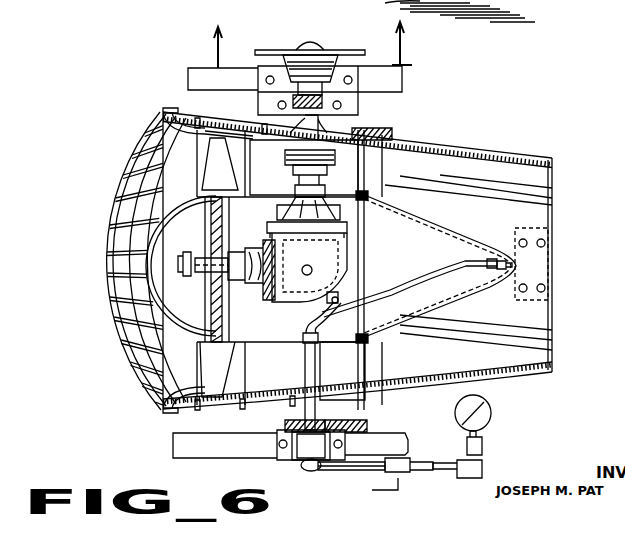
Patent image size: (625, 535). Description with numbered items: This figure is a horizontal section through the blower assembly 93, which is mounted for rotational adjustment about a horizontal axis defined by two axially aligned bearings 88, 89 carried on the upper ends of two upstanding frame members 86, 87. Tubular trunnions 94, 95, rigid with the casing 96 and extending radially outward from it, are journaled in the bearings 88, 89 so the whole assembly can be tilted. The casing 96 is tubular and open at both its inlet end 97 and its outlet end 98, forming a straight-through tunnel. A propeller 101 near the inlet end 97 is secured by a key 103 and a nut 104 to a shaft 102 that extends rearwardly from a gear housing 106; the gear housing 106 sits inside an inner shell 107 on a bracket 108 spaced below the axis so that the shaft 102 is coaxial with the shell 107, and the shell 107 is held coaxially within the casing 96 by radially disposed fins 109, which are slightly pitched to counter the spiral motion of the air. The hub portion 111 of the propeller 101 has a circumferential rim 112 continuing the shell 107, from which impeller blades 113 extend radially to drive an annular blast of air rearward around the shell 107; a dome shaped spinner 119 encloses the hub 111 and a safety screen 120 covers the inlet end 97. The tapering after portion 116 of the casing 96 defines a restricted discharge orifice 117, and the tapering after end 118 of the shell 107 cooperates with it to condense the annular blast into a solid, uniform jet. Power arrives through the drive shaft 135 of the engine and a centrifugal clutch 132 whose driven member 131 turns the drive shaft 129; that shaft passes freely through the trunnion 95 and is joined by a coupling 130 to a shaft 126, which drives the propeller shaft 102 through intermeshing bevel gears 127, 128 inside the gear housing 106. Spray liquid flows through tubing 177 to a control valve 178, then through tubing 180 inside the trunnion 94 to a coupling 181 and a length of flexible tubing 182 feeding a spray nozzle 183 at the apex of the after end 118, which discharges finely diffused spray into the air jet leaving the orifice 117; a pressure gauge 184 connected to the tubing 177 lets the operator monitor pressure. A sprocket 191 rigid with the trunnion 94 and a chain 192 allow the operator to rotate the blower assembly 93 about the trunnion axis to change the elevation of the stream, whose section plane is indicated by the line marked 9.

The section line arrows 9 is at (309, 45).
The upstanding frame member 86 is at (183, 448).
The upstanding frame member 87 is at (405, 83).
The bearing 88 is at (308, 442).
The bearing 89 is at (341, 105).
The blower assembly 93 is at (537, 152).
The tubular trunnion 94 is at (284, 410).
The tubular trunnion 95 is at (304, 167).
The casing 96 is at (262, 130).
The inlet end 97 is at (150, 172).
The outlet end 98 is at (532, 203).
The propeller 101 is at (208, 182).
The shaft 102 is at (232, 278).
The key 103 is at (212, 250).
The nut 104 is at (180, 260).
The gear housing 106 is at (322, 268).
The inner casing or shell 107 is at (363, 200).
The bracket 108 is at (332, 321).
The radially disposed fins 109 is at (288, 188).
The hub portion 111 is at (220, 308).
The circumferential rim 112 is at (192, 360).
The impeller blades 113 is at (213, 384).
The after portion 116 is at (507, 127).
The discharge orifice 117 is at (552, 367).
The after end 118 is at (472, 304).
The dome shaped spinner 119 is at (108, 327).
The safety screen 120 is at (108, 222).
The shaft 126 is at (350, 180).
The bevel gear 127 is at (348, 235).
The bevel gear 128 is at (330, 284).
The drive shaft 129 is at (367, 125).
The coupling 130 is at (350, 160).
The driven member 131 is at (325, 63).
The centrifugal clutch 132 is at (287, 55).
The drive shaft 135 is at (320, 38).
The tubing 177 is at (484, 488).
The control valve 178 is at (398, 473).
The tubing 180 is at (342, 468).
The coupling 181 is at (303, 340).
The flexible tubing 182 is at (445, 280).
The spray nozzle 183 is at (512, 266).
The pressure gauge 184 is at (492, 408).
The sprocket 191 is at (302, 422).
The chain 192 is at (365, 423).